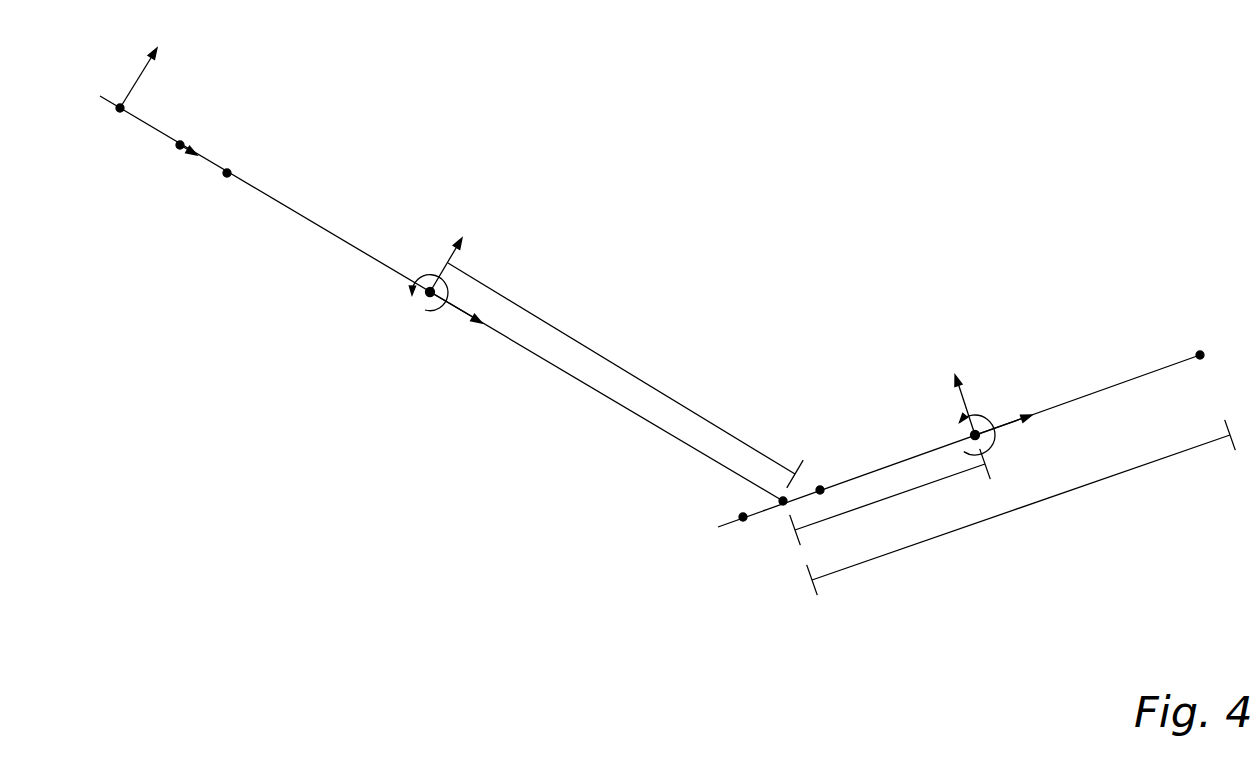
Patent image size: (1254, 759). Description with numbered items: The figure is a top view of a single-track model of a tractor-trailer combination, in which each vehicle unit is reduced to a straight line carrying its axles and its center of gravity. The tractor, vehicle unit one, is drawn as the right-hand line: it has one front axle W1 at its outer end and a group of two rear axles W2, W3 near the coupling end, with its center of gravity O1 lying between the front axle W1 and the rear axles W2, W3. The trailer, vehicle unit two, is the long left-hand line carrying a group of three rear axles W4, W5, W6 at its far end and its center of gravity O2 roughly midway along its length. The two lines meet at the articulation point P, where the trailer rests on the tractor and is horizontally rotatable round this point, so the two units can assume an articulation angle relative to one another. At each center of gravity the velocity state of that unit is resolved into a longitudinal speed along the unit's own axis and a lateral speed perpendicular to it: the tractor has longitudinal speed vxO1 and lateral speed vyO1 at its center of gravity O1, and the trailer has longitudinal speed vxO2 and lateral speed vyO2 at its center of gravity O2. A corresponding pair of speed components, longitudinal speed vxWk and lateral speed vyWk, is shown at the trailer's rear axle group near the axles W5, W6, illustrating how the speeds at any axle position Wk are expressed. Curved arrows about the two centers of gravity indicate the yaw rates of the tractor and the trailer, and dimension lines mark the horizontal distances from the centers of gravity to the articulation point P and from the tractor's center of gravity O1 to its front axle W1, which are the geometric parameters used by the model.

The front axle W1 is at (1185, 336).
The rear axle W2 is at (831, 470).
The rear axle W3 is at (742, 539).
The rear axle W4 is at (212, 194).
The rear axle W5 is at (165, 166).
The rear axle W6 is at (106, 126).
The articulation point P is at (777, 515).
The center of gravity of vehicle unit 1 O1 is at (948, 421).
The center of gravity of vehicle unit 2 O2 is at (418, 267).
The lateral speed at axle vyWk is at (159, 63).
The longitudinal speed at axle vxWk is at (209, 126).
The lateral speed of vehicle unit 1 at center of gravity vyO1 is at (974, 372).
The longitudinal speed of vehicle unit 1 vxO1 is at (1024, 389).
The lateral speed of vehicle unit 2 at center of gravity vyO2 is at (473, 250).
The longitudinal speed of vehicle unit 2 vxO2 is at (474, 342).